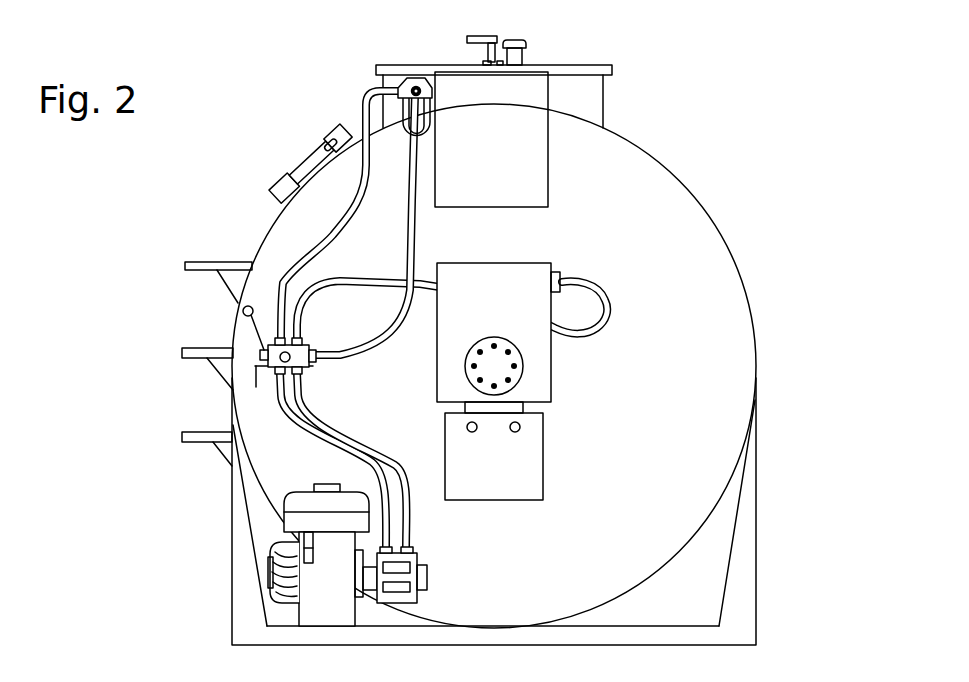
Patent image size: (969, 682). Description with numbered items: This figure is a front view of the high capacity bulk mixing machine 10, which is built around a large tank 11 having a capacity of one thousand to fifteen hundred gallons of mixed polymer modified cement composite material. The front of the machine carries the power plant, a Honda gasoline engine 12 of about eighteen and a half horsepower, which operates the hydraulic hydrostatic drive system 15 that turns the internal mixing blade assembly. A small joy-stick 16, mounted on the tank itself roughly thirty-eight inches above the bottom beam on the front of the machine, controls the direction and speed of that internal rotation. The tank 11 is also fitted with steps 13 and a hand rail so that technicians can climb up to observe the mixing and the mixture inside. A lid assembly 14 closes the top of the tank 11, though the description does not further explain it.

The high capacity bulk mixing machine 10 is at (763, 224).
The tank 11 is at (634, 236).
The gasoline engine 12 is at (338, 607).
The steps 13 is at (185, 266).
The lid assembly 14 is at (575, 65).
The hydraulic hydrostatic drive system 15 is at (556, 363).
The joy-stick 16 is at (299, 158).